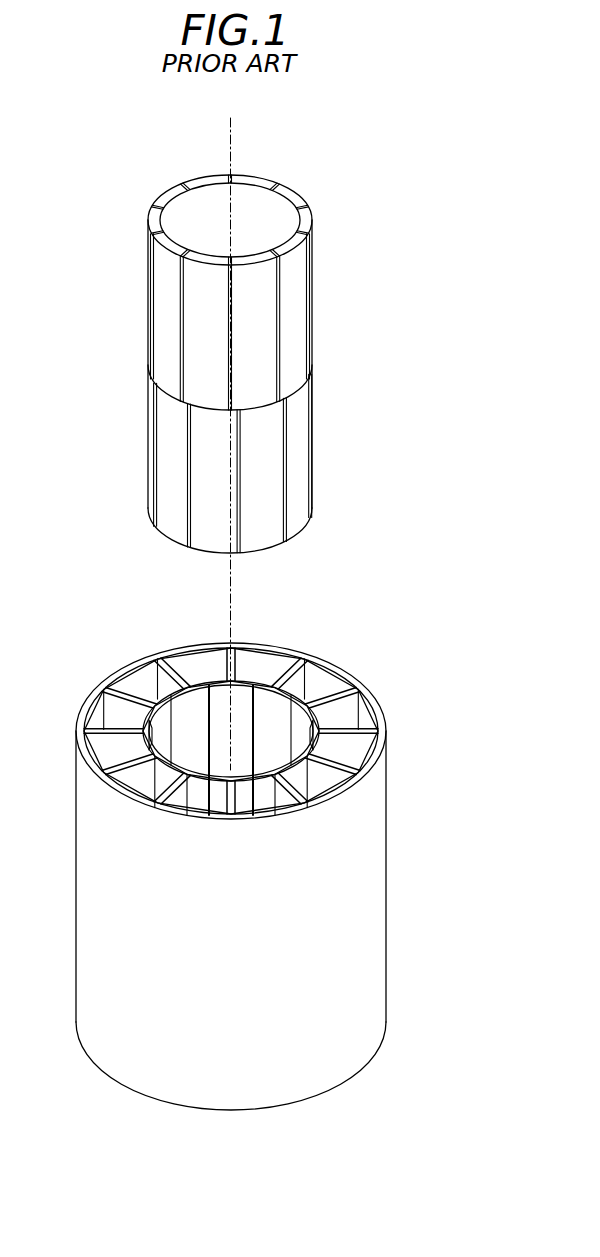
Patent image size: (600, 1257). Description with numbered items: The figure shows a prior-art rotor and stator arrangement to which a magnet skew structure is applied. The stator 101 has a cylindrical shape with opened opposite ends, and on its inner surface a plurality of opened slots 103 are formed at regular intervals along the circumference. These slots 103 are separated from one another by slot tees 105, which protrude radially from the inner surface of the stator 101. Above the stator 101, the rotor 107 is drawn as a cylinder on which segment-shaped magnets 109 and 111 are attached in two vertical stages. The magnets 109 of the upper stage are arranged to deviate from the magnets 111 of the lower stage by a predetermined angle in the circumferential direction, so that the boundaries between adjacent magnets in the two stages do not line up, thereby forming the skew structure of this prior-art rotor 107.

The stator 101 is at (386, 872).
The slots 103 is at (320, 672).
The slot tees 105 is at (173, 672).
The rotor 107 is at (343, 299).
The magnets of the upper stage 109 is at (293, 197).
The magnets of the lower stage 111 is at (305, 528).